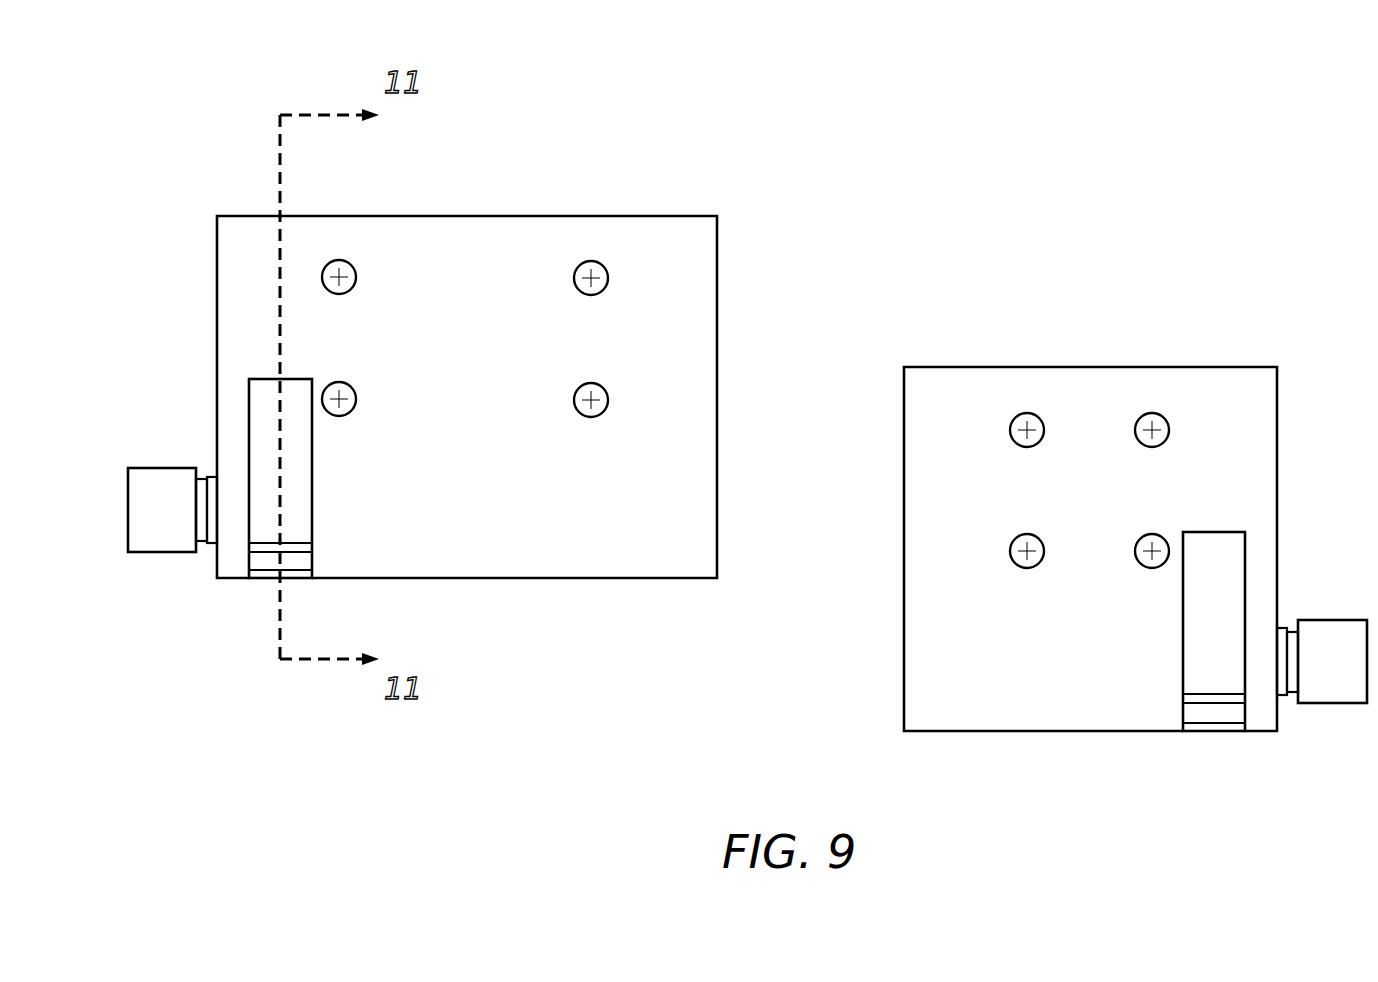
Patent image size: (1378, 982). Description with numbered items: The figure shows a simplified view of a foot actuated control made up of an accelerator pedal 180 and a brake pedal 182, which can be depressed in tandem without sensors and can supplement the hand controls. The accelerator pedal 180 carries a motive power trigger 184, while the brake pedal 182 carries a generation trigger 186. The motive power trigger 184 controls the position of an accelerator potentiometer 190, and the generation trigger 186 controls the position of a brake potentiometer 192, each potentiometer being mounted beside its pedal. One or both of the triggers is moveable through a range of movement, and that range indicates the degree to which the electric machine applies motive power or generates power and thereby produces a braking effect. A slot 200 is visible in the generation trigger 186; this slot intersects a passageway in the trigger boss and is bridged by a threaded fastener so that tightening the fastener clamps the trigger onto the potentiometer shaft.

The accelerator pedal 180 is at (1226, 300).
The brake pedal 182 is at (669, 170).
The motive power trigger 184 is at (1192, 645).
The generation trigger 186 is at (260, 507).
The accelerator potentiometer 190 is at (1338, 682).
The brake potentiometer 192 is at (160, 532).
The slot 200 is at (292, 552).